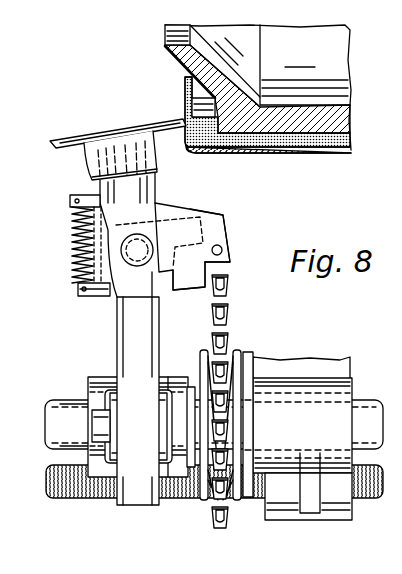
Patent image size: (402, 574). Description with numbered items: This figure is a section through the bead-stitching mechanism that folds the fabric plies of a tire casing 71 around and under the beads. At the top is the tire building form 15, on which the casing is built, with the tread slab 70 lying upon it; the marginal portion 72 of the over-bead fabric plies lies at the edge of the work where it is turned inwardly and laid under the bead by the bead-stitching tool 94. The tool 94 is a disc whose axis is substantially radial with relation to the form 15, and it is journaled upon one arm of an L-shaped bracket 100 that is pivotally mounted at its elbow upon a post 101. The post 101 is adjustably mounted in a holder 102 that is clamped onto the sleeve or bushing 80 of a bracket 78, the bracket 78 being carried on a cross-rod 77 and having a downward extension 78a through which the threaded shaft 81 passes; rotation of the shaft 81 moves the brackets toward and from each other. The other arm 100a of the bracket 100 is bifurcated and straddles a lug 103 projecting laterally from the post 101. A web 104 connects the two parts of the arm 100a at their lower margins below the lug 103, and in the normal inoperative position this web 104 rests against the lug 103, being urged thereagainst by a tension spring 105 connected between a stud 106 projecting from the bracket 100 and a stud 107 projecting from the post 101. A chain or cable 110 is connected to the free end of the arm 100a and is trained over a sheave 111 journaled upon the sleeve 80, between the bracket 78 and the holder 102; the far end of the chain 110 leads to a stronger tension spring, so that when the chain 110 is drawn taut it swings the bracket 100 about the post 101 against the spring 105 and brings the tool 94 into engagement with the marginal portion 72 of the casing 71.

The tire building form 15 is at (165, 34).
The tread slab 70 is at (333, 156).
The tire casing 71 is at (288, 156).
The marginal portion of over-bead fabric plies 72 is at (184, 104).
The cross-rod 77 is at (366, 406).
The bracket 78 is at (320, 377).
The downward extension of bracket 78a is at (340, 519).
The sleeve or bushing 80 is at (248, 357).
The shaft 81 is at (77, 503).
The bead-stitching tool 94 is at (68, 136).
The L-shaped bracket 100 is at (157, 190).
The bifurcated arm of bracket 100a is at (228, 214).
The post 101 is at (122, 325).
The holder 102 is at (93, 375).
The lug 103 is at (228, 229).
The web 104 is at (176, 288).
The tension spring 105 is at (72, 254).
The stud 106 is at (80, 195).
The stud 107 is at (90, 297).
The chain or cable 110 is at (228, 298).
The sheave 111 is at (203, 505).